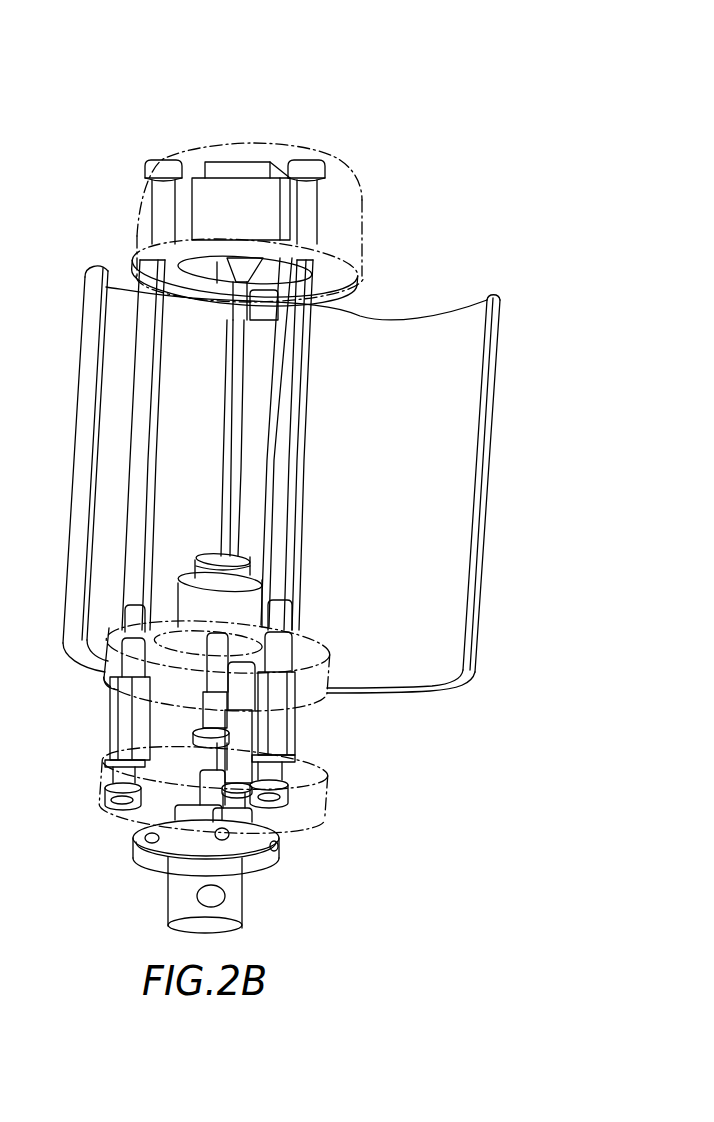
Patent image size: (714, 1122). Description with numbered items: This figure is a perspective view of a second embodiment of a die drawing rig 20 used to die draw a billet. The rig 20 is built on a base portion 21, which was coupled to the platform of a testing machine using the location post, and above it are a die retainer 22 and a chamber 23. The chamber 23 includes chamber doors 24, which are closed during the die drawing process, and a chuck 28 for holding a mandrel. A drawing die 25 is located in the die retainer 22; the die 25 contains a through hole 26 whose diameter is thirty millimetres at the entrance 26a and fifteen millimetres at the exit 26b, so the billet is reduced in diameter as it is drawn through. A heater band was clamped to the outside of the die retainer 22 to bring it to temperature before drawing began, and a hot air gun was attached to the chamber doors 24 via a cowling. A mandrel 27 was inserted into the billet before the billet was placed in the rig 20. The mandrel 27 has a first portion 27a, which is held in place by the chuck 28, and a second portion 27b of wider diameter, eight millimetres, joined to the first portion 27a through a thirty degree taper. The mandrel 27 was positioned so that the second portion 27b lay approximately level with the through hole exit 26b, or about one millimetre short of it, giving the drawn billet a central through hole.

The drawing rig 20 is at (434, 171).
The base portion 21 is at (280, 860).
The die retainer 22 is at (330, 150).
The chamber 23 is at (190, 372).
The chamber doors 24 is at (88, 319).
The drawing die 25 is at (245, 190).
The through hole 26 is at (305, 268).
The entrance 26a is at (233, 162).
The exit 26b is at (237, 277).
The mandrel 27 is at (233, 413).
The first portion 27a is at (232, 487).
The second portion 27b is at (233, 284).
The chuck 28 is at (193, 590).